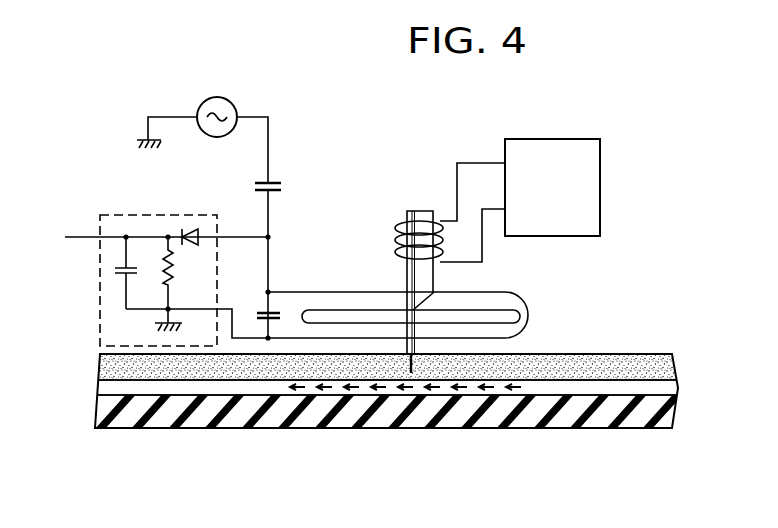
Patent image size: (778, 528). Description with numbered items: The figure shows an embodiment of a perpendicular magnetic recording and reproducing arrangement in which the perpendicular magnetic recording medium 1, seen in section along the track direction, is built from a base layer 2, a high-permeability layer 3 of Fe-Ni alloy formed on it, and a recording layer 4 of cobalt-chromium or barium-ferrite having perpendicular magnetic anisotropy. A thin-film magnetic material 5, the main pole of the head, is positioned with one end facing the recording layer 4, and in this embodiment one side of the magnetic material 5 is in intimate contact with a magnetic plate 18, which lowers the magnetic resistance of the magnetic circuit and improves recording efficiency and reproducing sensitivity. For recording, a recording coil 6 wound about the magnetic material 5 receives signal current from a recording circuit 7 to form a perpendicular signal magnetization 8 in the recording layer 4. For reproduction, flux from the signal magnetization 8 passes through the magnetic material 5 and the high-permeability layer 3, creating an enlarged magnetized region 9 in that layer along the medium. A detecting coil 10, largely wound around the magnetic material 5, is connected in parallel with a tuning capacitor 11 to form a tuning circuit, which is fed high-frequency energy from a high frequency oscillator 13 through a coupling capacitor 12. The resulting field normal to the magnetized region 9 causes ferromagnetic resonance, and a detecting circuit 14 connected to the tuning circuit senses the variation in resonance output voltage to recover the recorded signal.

The perpendicular magnetic recording medium 1 is at (695, 389).
The base layer 2 is at (621, 420).
The high-permeability layer 3 is at (635, 392).
The recording layer 4 is at (606, 355).
The thin-film magnetic material 5 is at (407, 276).
The recording coil 6 is at (400, 229).
The recording circuit 7 is at (601, 179).
The perpendicular signal magnetization 8 is at (419, 365).
The enlarged magnetized region 9 is at (430, 392).
The detecting coil 10 is at (526, 300).
The tuning capacitor 11 is at (262, 309).
The coupling capacitor 12 is at (283, 186).
The high frequency oscillator 13 is at (223, 97).
The detecting circuit 14 is at (100, 297).
The magnetic plate 18 is at (422, 208).